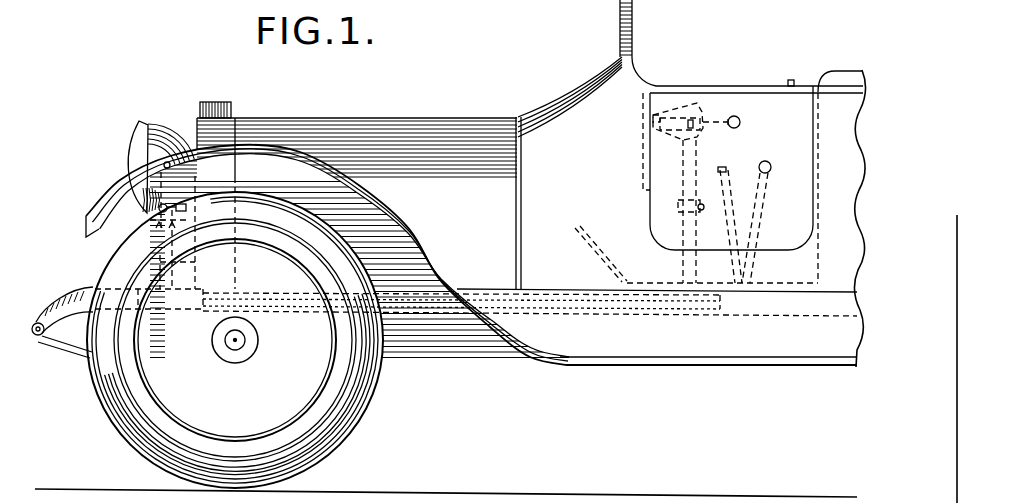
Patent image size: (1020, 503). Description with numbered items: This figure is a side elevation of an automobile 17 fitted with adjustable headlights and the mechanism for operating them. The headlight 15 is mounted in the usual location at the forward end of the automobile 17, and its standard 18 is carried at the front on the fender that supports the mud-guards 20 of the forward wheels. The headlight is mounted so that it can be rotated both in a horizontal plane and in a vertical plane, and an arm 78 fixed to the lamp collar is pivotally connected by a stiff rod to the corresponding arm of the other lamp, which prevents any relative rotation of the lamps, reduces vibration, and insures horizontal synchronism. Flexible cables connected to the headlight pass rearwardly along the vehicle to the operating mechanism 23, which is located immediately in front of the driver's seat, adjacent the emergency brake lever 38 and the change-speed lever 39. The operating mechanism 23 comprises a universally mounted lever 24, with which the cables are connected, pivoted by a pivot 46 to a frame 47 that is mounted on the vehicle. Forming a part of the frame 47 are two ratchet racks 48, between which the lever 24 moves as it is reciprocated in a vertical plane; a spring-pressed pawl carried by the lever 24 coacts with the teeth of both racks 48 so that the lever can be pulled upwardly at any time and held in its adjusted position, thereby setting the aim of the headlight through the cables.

The headlight 15 is at (153, 140).
The automobile 17 is at (386, 207).
The standard 18 is at (150, 226).
The mud-guard 20 is at (103, 200).
The operating mechanism 23 is at (703, 211).
The lever 24 is at (722, 118).
The emergency brake lever 38 is at (735, 168).
The change-speed lever 39 is at (771, 172).
The pivot 46 is at (658, 112).
The frame 47 is at (680, 108).
The ratchet rack 48 is at (706, 114).
The arm 78 is at (178, 213).